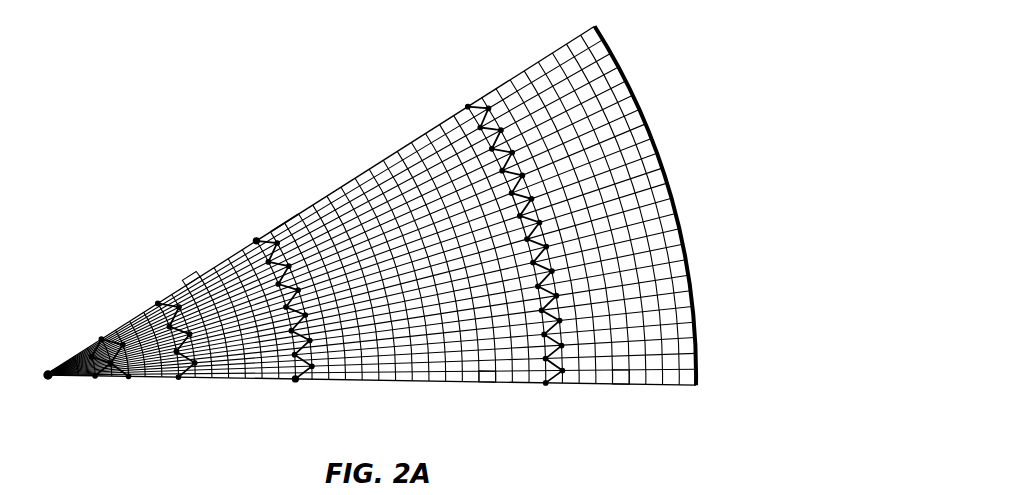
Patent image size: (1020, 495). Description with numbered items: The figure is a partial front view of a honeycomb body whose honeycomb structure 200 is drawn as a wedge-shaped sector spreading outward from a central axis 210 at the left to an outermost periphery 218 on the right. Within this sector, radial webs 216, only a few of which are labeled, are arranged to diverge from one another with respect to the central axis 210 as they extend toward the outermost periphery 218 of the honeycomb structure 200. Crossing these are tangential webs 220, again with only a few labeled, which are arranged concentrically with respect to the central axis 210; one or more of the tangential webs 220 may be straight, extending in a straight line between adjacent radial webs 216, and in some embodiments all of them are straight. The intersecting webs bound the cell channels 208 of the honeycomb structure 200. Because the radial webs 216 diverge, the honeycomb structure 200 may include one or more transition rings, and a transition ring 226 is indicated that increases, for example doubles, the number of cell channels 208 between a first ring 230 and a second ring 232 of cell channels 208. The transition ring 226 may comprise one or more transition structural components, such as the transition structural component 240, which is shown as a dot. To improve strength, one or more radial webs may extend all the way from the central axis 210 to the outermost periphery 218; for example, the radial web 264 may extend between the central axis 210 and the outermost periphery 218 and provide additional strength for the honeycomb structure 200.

The honeycomb structure 200 is at (244, 90).
The cell channels 208 is at (195, 290).
The central axis 210 is at (48, 379).
The radial webs 216 is at (590, 75).
The outermost periphery 218 is at (603, 38).
The tangential webs 220 is at (417, 177).
The transition ring 226 is at (256, 226).
The first ring 230 is at (238, 240).
The second ring 232 is at (275, 216).
The transition structural component 240 is at (294, 393).
The radial web 264 is at (510, 78).